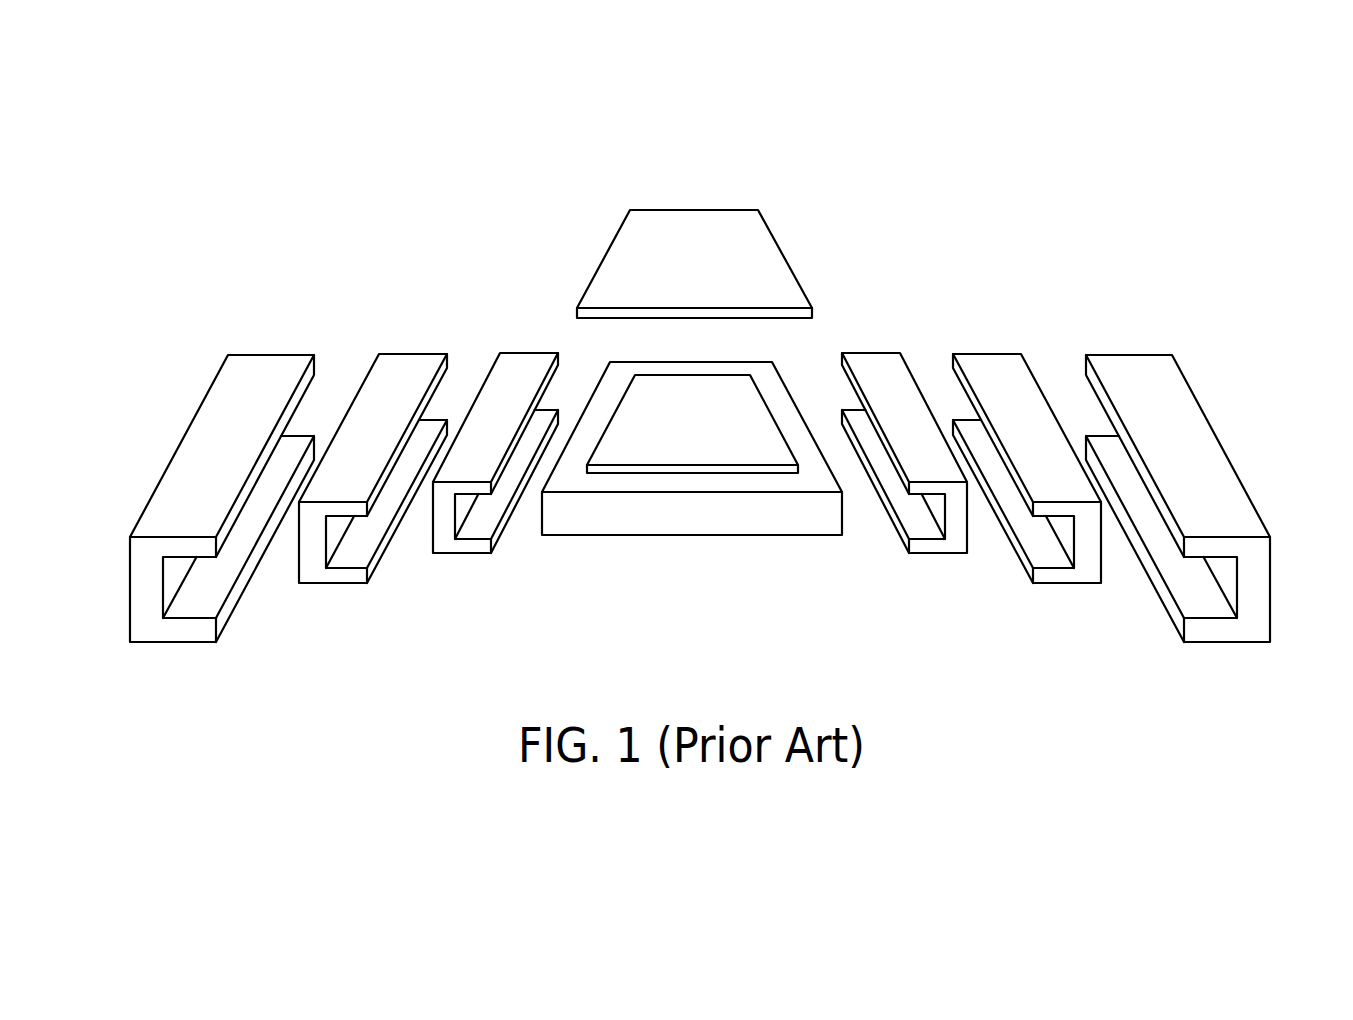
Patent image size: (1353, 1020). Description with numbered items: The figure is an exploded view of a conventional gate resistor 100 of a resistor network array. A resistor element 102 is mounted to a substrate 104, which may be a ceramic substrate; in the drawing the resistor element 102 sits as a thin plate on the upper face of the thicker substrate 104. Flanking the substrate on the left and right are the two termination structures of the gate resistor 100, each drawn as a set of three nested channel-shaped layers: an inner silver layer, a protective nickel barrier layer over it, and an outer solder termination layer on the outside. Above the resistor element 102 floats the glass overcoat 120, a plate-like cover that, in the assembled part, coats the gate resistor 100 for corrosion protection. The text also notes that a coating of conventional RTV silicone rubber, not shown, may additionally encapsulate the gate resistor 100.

The gate resistor 100 is at (323, 124).
The resistor element 102 is at (683, 415).
The substrate 104 is at (662, 515).
The glass overcoat 120 is at (690, 208).